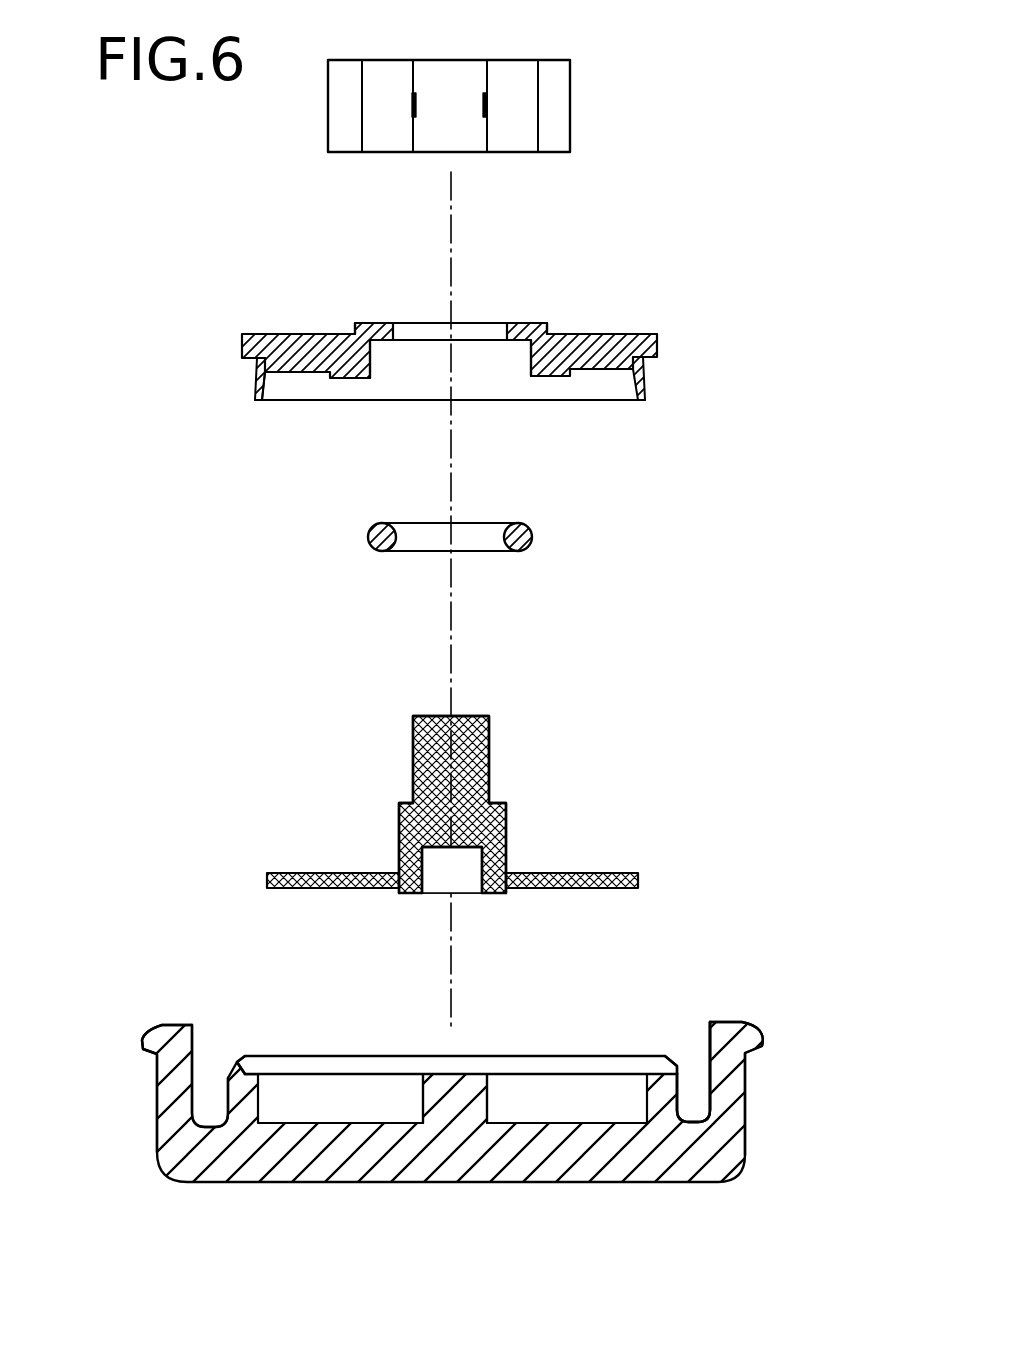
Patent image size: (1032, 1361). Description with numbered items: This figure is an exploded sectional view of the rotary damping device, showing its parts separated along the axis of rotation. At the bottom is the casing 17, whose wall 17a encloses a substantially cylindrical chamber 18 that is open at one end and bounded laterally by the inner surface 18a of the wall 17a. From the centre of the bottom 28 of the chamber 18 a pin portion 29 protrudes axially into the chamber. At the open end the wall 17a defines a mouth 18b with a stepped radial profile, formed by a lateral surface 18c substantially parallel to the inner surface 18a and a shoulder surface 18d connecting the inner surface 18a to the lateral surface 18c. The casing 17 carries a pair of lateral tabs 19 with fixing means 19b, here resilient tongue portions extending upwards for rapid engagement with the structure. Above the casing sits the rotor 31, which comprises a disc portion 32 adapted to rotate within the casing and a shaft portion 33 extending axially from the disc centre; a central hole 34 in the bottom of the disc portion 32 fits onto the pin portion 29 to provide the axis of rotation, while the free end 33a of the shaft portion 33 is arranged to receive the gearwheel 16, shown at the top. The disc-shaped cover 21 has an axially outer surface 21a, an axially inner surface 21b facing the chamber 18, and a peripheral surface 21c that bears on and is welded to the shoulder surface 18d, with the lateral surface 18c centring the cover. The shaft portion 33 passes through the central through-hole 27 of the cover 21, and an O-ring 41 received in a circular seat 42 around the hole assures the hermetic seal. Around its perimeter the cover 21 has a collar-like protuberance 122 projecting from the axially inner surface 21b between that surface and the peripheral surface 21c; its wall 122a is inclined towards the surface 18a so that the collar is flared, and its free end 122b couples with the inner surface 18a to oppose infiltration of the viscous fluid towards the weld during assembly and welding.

The gearwheel 16 is at (572, 90).
The cover 21 is at (583, 322).
The axially outer surface 21a is at (632, 332).
The axially inner surface 21b is at (608, 370).
The peripheral surface 21c is at (647, 358).
The central through-hole 27 is at (404, 328).
The circular seat 42 is at (518, 341).
The collar-like protuberance 122 is at (260, 388).
The wall of the collar-like protuberance 122a is at (279, 390).
The free end of the collar-like protuberance 122b is at (260, 402).
The O-ring 41 is at (533, 536).
The rotor 31 is at (488, 815).
The disc portion 32 is at (356, 873).
The shaft portion 33 is at (398, 807).
The free end of the shaft portion 33a is at (490, 738).
The central hole of the rotor 34 is at (422, 867).
The casing 17 is at (446, 1112).
The wall of the casing 17a is at (700, 1110).
The cylindrical chamber 18 is at (380, 1098).
The inner surface of the wall 18a is at (637, 1088).
The mouth 18b is at (569, 1056).
The lateral surface 18c is at (277, 1060).
The shoulder surface 18d is at (633, 1060).
The lateral tabs 19 is at (205, 1125).
The fixing means 19b is at (157, 1122).
The bottom of the cylindrical chamber 28 is at (333, 1122).
The pin portion 29 is at (517, 1078).